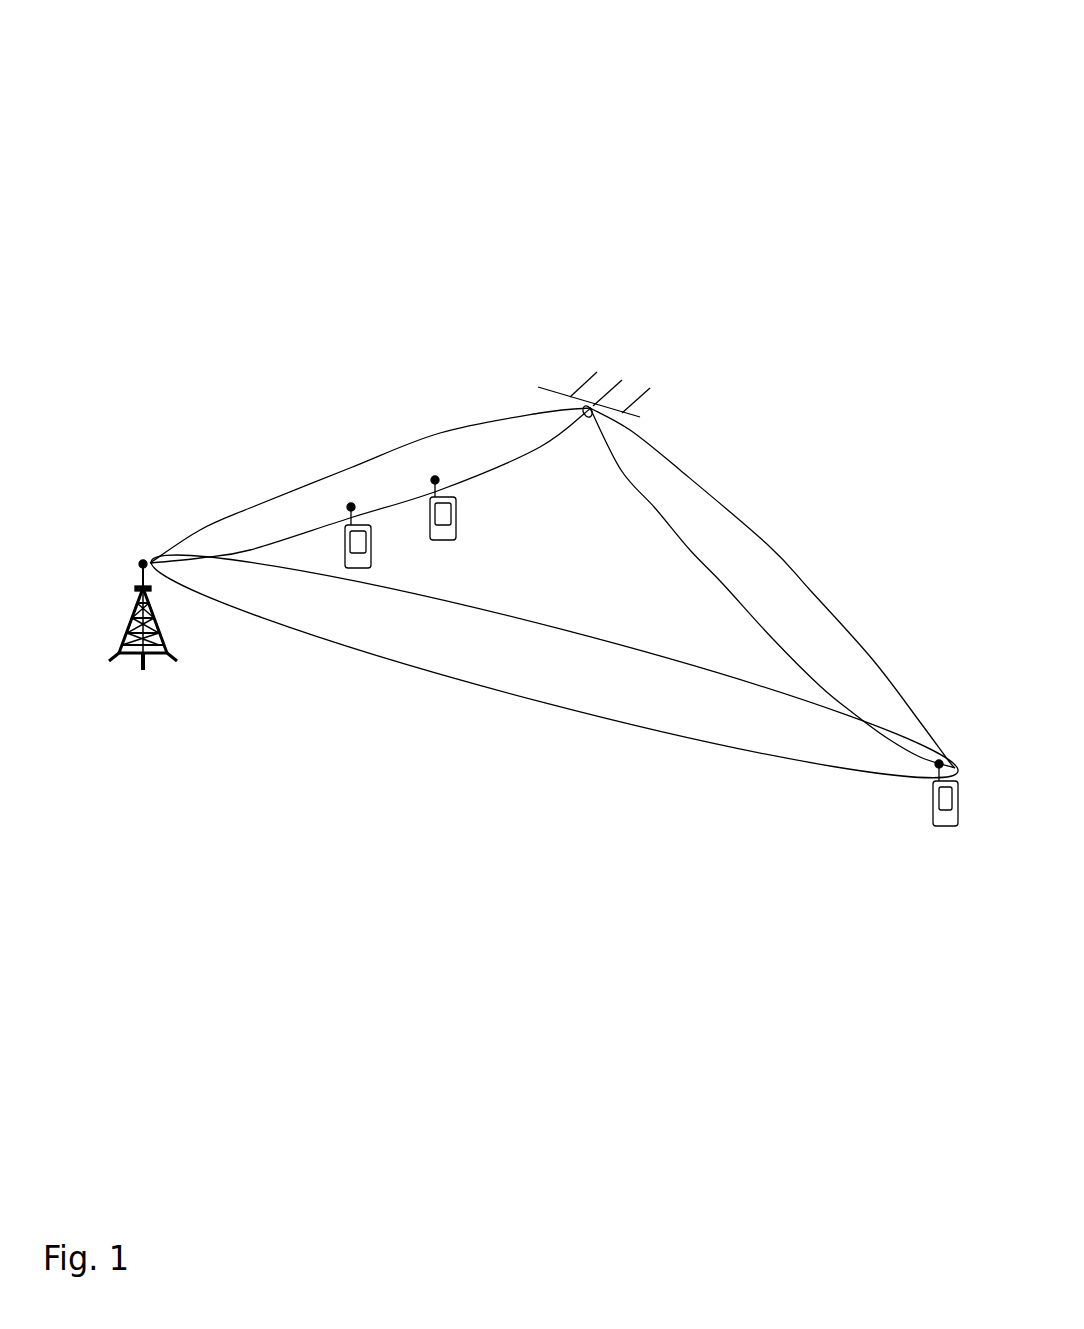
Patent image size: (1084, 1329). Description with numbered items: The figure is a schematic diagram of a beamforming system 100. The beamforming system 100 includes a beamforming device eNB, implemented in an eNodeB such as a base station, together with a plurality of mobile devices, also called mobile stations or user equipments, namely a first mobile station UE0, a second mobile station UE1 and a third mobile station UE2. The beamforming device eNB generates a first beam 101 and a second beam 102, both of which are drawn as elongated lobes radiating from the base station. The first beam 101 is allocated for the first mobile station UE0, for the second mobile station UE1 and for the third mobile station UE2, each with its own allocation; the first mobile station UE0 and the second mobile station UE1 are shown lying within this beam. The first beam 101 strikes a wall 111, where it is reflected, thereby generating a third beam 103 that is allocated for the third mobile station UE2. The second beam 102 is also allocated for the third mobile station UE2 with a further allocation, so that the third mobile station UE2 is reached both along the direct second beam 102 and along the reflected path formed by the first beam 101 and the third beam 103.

The beamforming system 100 is at (318, 123).
The first beam 101 is at (348, 464).
The second beam 102 is at (548, 712).
The third beam 103 is at (772, 545).
The wall 111 is at (606, 372).
The beamforming device eNB is at (159, 672).
The first mobile station UE0 is at (382, 569).
The second mobile station UE1 is at (472, 527).
The third mobile station UE2 is at (916, 803).